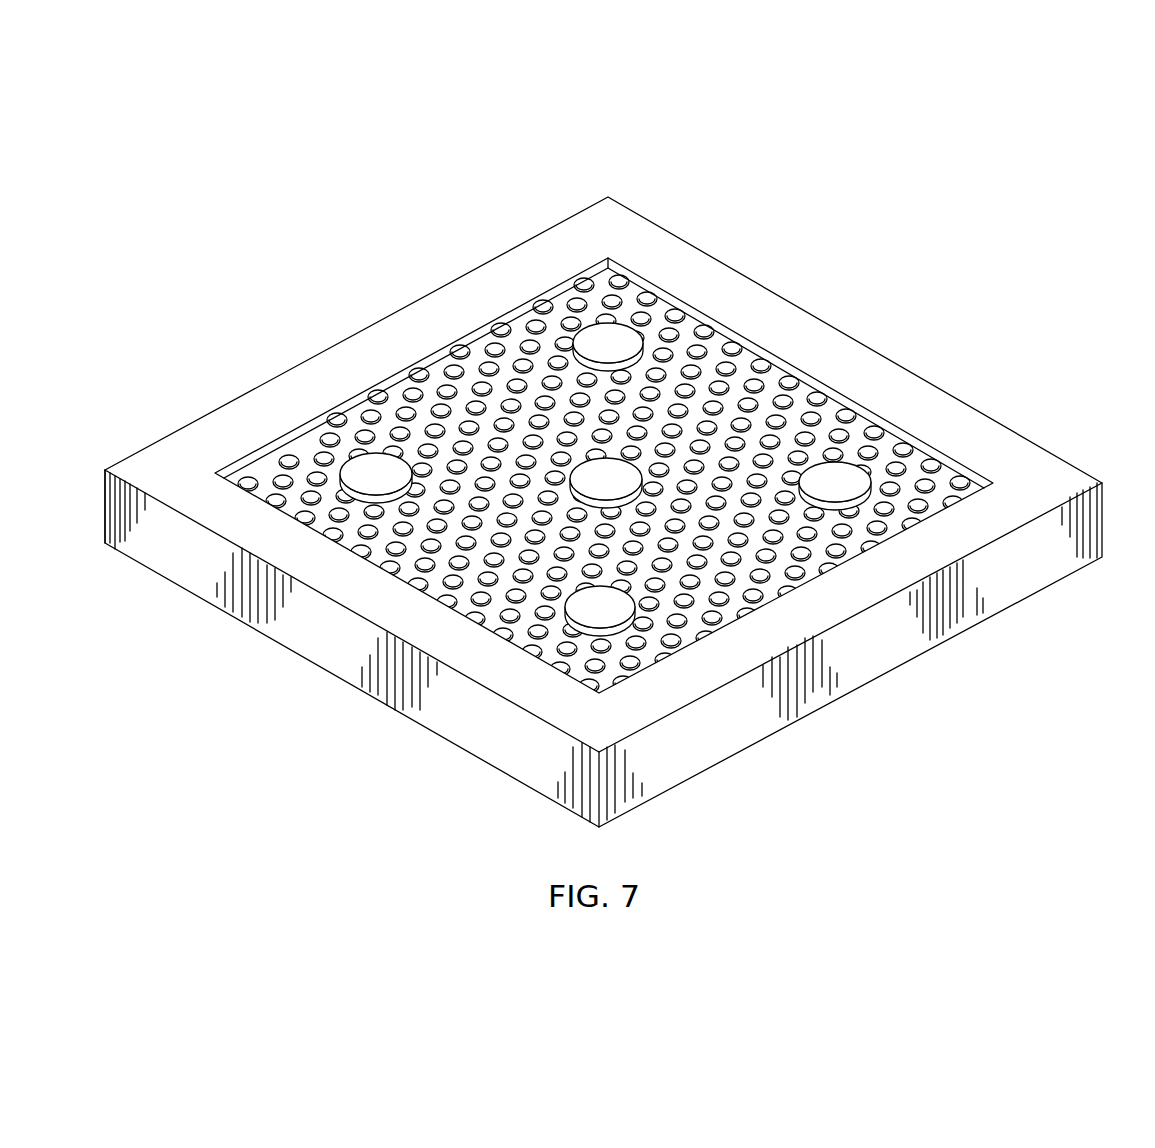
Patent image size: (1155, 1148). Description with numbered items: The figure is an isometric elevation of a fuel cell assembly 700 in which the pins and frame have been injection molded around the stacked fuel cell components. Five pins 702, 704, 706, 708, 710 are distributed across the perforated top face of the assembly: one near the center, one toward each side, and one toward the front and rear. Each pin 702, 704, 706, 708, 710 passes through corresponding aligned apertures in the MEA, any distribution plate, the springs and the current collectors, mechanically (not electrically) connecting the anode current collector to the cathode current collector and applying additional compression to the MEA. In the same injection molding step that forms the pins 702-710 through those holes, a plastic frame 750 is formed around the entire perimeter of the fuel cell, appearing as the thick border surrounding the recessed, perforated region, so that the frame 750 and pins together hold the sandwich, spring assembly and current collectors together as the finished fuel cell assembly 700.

The fuel cell assembly 700 is at (1130, 129).
The pin 702 is at (607, 343).
The pin 704 is at (375, 470).
The pin 706 is at (597, 475).
The pin 708 is at (608, 603).
The pin 710 is at (835, 480).
The plastic frame 750 is at (858, 663).